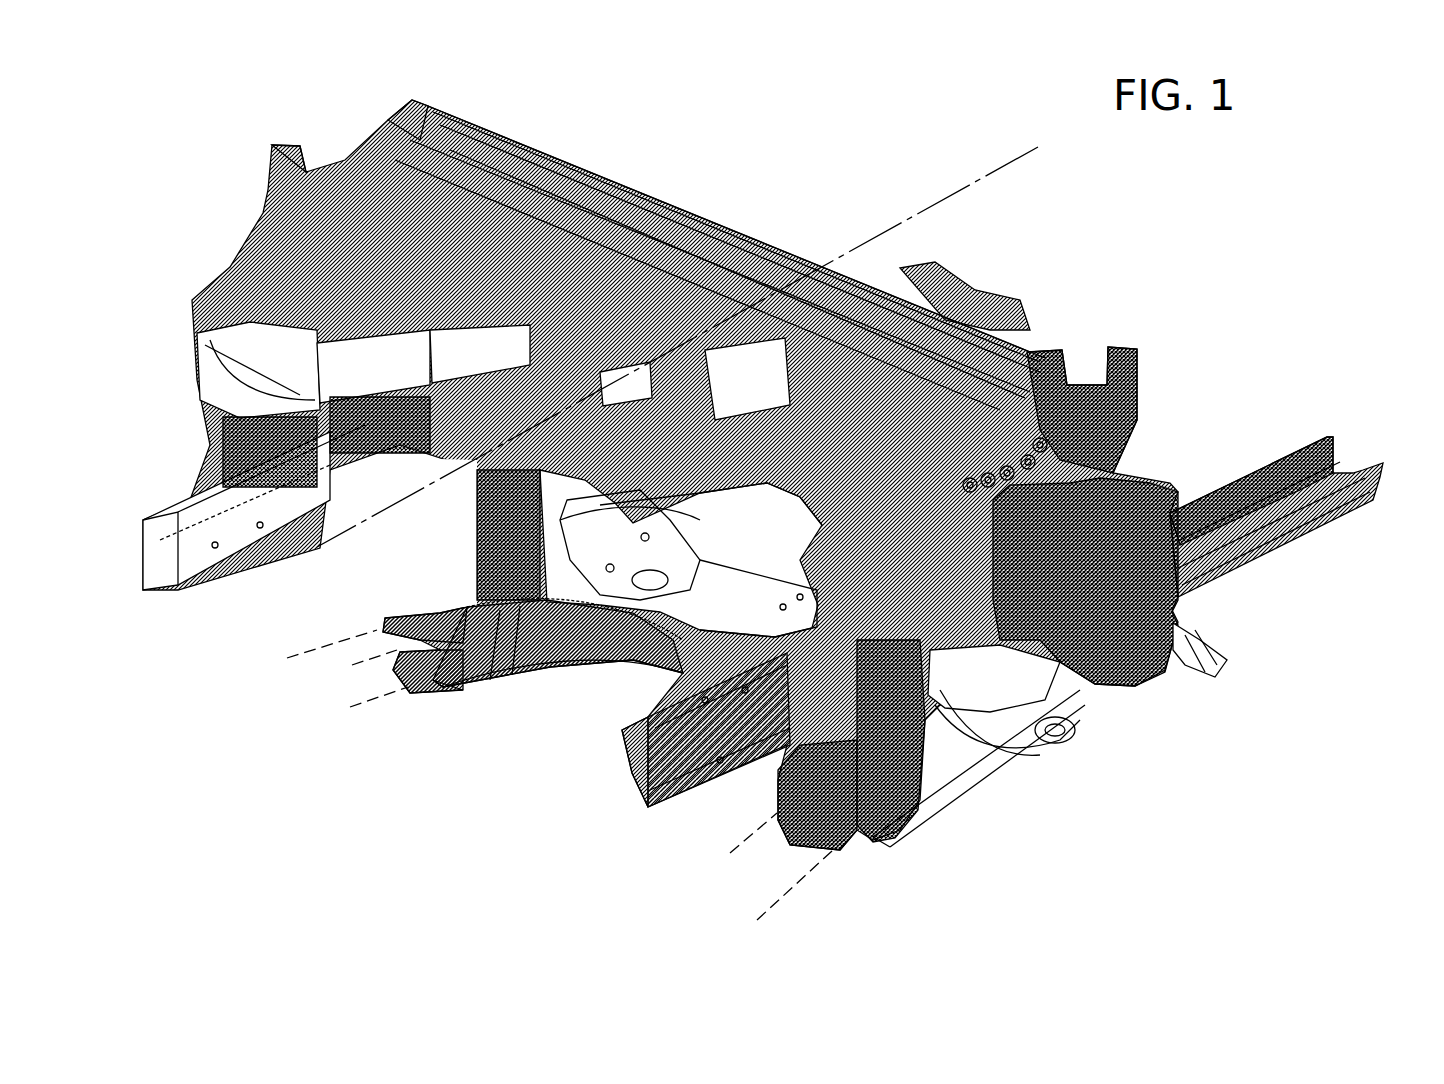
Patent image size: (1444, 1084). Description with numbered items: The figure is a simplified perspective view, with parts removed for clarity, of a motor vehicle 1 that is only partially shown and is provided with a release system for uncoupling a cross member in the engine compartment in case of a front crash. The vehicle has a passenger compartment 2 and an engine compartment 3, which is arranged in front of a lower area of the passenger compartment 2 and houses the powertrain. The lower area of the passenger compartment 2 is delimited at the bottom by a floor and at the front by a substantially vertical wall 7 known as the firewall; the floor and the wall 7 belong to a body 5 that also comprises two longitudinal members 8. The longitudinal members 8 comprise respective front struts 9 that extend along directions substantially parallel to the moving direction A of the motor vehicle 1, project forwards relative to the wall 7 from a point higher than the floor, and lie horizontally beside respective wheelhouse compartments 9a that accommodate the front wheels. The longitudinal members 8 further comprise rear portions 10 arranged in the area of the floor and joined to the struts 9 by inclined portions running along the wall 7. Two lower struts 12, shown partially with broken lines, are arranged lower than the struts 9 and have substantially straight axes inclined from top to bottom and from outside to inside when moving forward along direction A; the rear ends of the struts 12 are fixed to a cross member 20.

The motor vehicle 1 is at (1118, 242).
The passenger compartment 2 is at (630, 150).
The engine compartment 3 is at (275, 632).
The body 5 is at (755, 244).
The wall 7 is at (670, 217).
The longitudinal members 8 is at (894, 264).
The front struts 9 is at (193, 580).
The wheelhouse compartments 9a is at (194, 382).
The rear portions 10 is at (928, 283).
The lower struts 12 is at (377, 697).
The cross member 20 is at (911, 810).
The moving direction A is at (1025, 150).